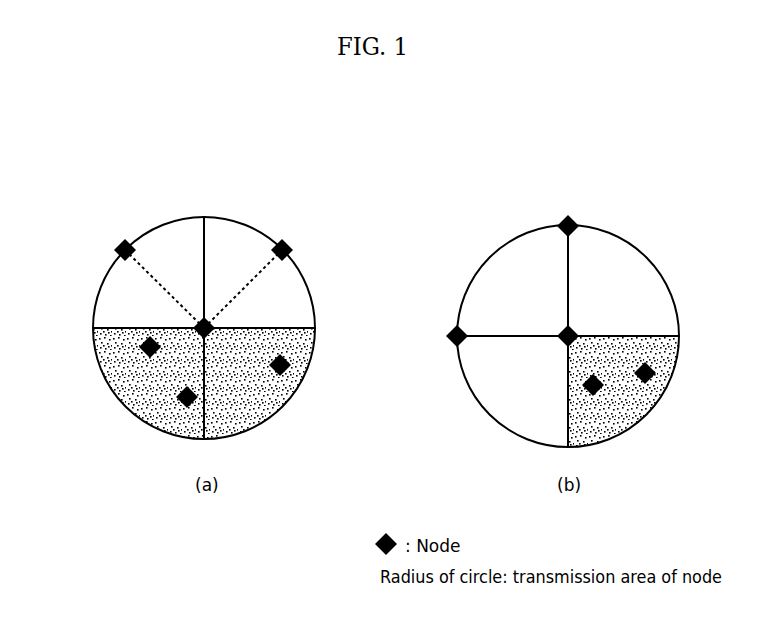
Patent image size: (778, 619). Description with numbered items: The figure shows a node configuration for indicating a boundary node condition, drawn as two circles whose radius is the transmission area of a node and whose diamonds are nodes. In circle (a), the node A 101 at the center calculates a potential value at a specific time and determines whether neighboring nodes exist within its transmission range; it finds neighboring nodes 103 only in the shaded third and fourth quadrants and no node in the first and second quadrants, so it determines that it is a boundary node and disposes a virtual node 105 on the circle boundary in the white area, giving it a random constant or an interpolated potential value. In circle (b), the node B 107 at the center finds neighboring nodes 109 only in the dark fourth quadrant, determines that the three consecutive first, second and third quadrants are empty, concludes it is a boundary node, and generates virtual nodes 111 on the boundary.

The node A 101 is at (212, 325).
The neighboring nodes 103 is at (290, 365).
The virtual node 105 is at (120, 257).
The node B 107 is at (572, 328).
The neighboring nodes 109 is at (655, 374).
The virtual nodes 111 is at (567, 215).